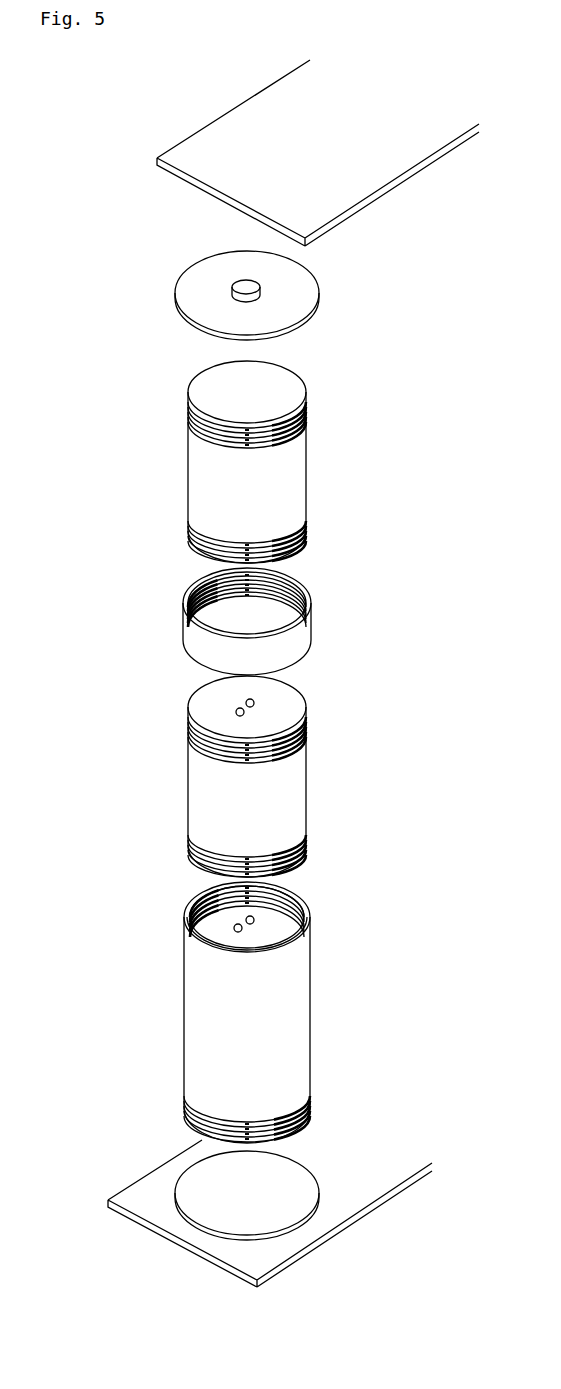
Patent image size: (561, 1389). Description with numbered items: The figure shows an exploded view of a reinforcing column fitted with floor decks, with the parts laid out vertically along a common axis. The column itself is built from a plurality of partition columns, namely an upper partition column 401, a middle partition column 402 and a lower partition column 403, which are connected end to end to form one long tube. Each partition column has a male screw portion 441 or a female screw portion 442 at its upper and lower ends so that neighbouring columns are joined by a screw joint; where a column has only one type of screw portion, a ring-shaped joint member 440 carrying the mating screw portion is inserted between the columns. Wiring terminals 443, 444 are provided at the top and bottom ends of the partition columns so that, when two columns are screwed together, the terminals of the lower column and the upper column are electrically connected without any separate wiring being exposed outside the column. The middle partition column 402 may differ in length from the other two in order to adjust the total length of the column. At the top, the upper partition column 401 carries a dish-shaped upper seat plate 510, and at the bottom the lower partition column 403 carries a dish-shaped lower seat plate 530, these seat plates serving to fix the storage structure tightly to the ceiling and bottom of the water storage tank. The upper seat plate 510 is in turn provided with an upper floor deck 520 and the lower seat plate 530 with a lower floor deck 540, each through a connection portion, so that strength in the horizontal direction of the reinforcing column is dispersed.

The upper partition column 401 is at (300, 463).
The medium partition column 402 is at (300, 785).
The lower partition column 403 is at (297, 1017).
The joint member 440 is at (307, 628).
The male screw portion 441 is at (305, 405).
The female screw portion 442 is at (200, 577).
The wiring terminal 443 is at (248, 700).
The wiring terminal 444 is at (162, 803).
The upper seat plate 510 is at (305, 300).
The upper floor deck 520 is at (377, 173).
The lower seat plate 530 is at (205, 1180).
The lower floor deck 540 is at (330, 1213).